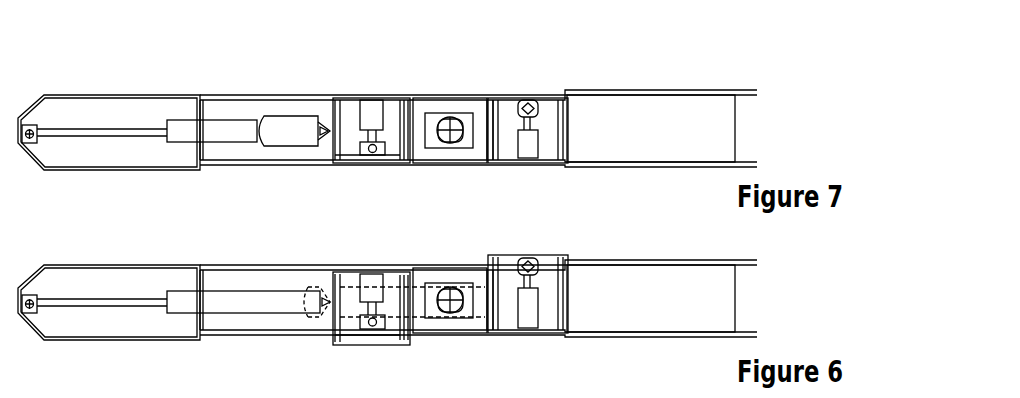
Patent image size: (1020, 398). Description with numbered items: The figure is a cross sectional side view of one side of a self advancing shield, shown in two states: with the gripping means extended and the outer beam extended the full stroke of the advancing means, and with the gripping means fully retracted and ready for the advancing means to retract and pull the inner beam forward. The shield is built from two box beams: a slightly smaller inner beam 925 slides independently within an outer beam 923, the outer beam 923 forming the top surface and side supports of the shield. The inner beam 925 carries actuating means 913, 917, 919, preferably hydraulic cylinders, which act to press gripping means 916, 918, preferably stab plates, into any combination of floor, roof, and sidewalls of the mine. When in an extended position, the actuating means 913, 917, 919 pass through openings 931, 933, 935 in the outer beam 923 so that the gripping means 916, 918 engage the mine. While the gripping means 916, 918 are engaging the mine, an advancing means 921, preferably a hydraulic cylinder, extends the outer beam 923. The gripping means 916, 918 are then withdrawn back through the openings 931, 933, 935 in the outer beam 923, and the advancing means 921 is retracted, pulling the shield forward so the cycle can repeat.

In FIG. 7, the actuating means 913 is at (445, 118).
In FIG. 6, the actuating means 913 is at (445, 288).
In FIG. 7, the gripping means 916 is at (514, 96).
In FIG. 6, the gripping means 916 is at (556, 257).
In FIG. 7, the actuating means 917 is at (531, 126).
In FIG. 6, the actuating means 917 is at (528, 262).
In FIG. 7, the gripping means 918 is at (362, 163).
In FIG. 6, the gripping means 918 is at (372, 345).
In FIG. 7, the actuating means 919 is at (370, 103).
In FIG. 6, the actuating means 919 is at (372, 274).
In FIG. 7, the advancing means 921 is at (240, 120).
In FIG. 6, the advancing means 921 is at (182, 291).
In FIG. 7, the outer beam 923 is at (78, 95).
In FIG. 6, the outer beam 923 is at (80, 265).
In FIG. 7, the inner beam 925 is at (230, 168).
In FIG. 6, the inner beam 925 is at (448, 337).
In FIG. 7, the opening 931 is at (305, 150).
In FIG. 6, the opening 931 is at (320, 318).
In FIG. 7, the opening 933 is at (276, 168).
In FIG. 6, the opening 933 is at (236, 337).
In FIG. 7, the opening 935 is at (404, 88).
In FIG. 6, the opening 935 is at (405, 262).